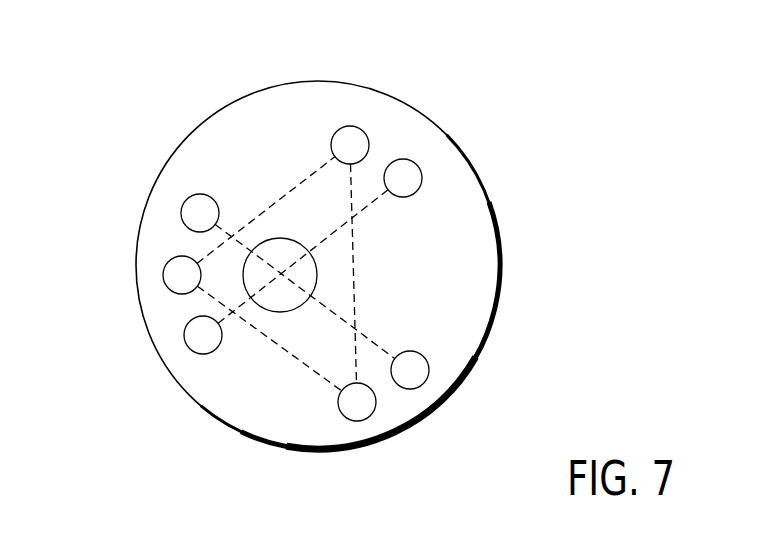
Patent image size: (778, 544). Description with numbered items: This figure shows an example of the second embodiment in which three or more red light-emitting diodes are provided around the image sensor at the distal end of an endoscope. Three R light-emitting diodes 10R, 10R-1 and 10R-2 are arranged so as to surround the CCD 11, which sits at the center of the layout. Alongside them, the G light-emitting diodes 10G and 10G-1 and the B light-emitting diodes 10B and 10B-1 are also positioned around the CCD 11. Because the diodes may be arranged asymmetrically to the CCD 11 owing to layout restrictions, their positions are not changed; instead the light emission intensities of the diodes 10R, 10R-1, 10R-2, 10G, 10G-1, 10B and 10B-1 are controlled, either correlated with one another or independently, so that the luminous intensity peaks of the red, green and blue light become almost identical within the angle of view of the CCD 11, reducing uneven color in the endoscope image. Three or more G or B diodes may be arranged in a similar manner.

The CCD 11 is at (203, 405).
The R light-emitting diode 10R-2 is at (353, 126).
The G light-emitting diode 10G is at (413, 158).
The B light-emitting diode 10B-1 is at (148, 201).
The R light-emitting diode 10R-1 is at (137, 271).
The G light-emitting diode 10G-1 is at (157, 349).
The B light-emitting diode 10B is at (423, 388).
The R light-emitting diode 10R is at (363, 419).